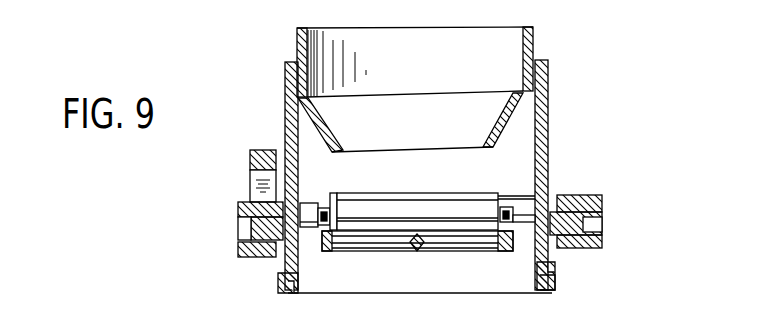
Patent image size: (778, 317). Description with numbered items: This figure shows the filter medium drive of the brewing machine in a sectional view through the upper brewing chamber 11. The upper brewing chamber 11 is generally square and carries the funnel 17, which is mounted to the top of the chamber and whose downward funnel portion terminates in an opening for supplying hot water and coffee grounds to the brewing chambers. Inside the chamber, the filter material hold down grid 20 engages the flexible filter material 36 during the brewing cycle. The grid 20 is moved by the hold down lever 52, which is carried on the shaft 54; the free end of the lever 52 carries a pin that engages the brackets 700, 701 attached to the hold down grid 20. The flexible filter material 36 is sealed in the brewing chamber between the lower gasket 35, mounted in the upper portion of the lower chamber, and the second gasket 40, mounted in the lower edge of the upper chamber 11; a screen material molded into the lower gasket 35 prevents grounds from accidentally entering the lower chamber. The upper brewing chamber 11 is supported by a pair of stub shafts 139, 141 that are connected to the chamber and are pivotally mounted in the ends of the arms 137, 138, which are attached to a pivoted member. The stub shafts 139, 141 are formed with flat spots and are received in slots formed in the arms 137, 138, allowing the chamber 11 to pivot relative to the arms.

The funnel 17 is at (533, 42).
The upper brewing chamber 11 is at (540, 118).
The shaft 54 is at (306, 207).
The bracket 700 is at (331, 200).
The hold down lever 52 is at (462, 195).
The bracket 701 is at (508, 205).
The filter material hold down grid 20 is at (380, 252).
The arm 137 is at (238, 208).
The stub shaft 139 is at (251, 230).
The arm 138 is at (602, 200).
The stub shaft 141 is at (583, 223).
The second gasket 40 is at (555, 283).
The flexible filter material 36 is at (572, 309).
The lower gasket 35 is at (607, 311).